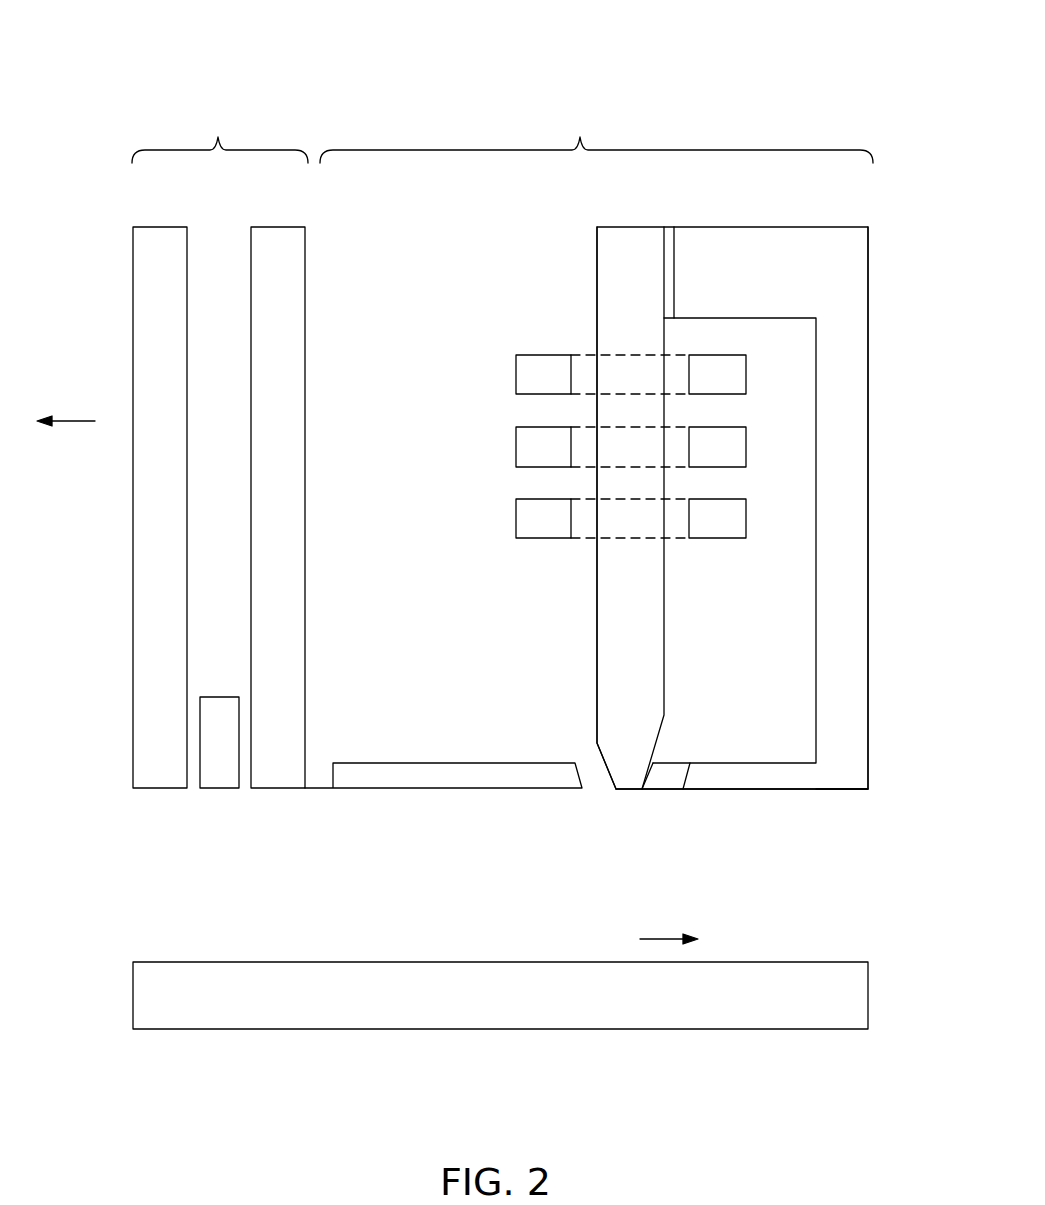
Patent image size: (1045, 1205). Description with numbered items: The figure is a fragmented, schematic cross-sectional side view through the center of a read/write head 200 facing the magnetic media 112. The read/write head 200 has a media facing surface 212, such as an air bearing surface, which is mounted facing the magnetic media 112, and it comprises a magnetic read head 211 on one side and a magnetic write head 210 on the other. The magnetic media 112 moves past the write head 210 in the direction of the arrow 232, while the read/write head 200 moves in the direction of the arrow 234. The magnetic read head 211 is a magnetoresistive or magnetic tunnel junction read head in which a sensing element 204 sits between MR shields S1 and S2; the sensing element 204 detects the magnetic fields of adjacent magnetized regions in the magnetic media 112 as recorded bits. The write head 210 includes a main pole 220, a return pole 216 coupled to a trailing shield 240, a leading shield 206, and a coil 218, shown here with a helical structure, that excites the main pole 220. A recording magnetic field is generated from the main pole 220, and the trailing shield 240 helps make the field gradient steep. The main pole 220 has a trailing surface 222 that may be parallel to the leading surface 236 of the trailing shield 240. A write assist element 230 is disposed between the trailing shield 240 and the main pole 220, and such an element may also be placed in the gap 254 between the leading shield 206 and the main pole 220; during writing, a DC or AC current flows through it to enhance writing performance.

The read/write head 200 is at (128, 54).
The magnetic read head 211 is at (220, 135).
The magnetic write head 210 is at (596, 135).
The return pole 216 is at (845, 278).
The arrow 234 is at (75, 421).
The coil 218 is at (543, 538).
The leading surface 236 is at (816, 620).
The trailing surface 222 is at (664, 702).
The main pole 220 is at (610, 744).
The trailing shield 240 is at (868, 751).
The gap 254 is at (597, 787).
The write assist element 230 is at (668, 777).
The media facing surface 212 is at (805, 790).
The leading shield 206 is at (383, 790).
The sensing element 204 is at (220, 790).
The MR shield S1 is at (157, 790).
The MR shield S2 is at (280, 790).
The arrow 232 is at (657, 939).
The magnetic media 112 is at (868, 993).